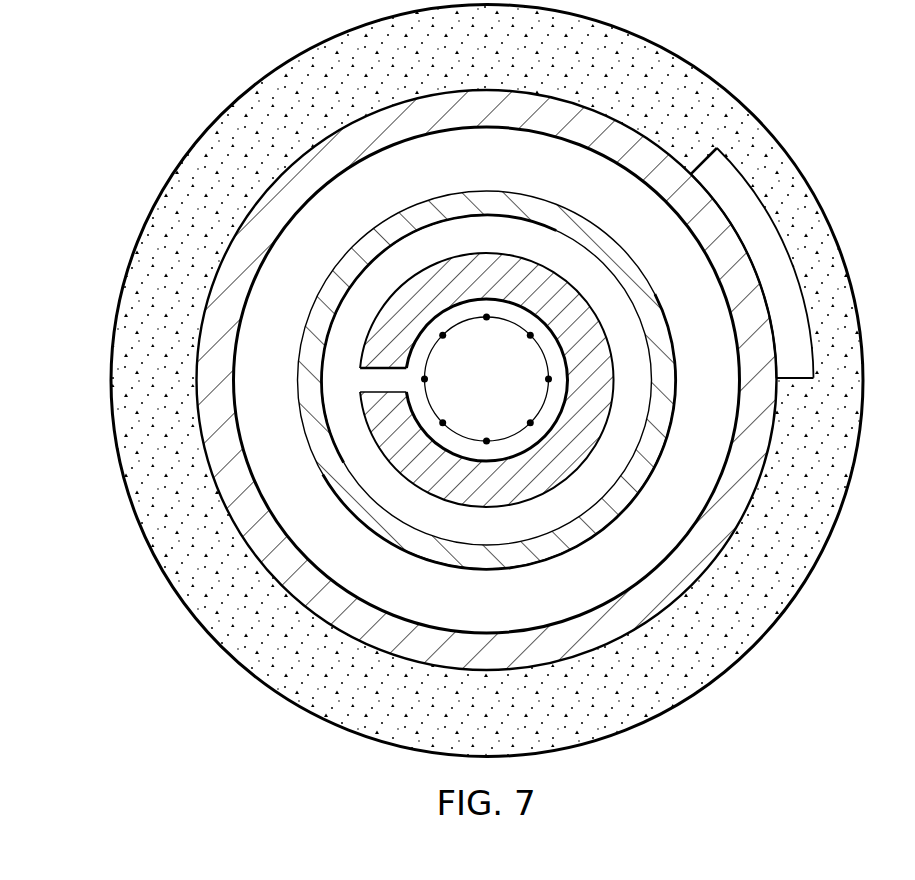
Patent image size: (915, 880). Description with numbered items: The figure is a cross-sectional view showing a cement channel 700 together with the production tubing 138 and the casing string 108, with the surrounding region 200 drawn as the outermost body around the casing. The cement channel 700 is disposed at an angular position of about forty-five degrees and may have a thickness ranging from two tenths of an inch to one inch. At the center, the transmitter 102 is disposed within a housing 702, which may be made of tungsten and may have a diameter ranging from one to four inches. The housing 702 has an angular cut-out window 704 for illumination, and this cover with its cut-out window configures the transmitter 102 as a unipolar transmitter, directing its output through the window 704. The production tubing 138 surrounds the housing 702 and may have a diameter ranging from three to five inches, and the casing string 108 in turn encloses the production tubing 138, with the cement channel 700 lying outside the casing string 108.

The transmitter 102 is at (428, 379).
The casing string 108 is at (414, 629).
The production tubing 138 is at (542, 208).
The formation / cement 200 is at (712, 672).
The cement channel 700 is at (777, 253).
The housing 702 is at (537, 487).
The angular cut-out window 704 is at (401, 370).